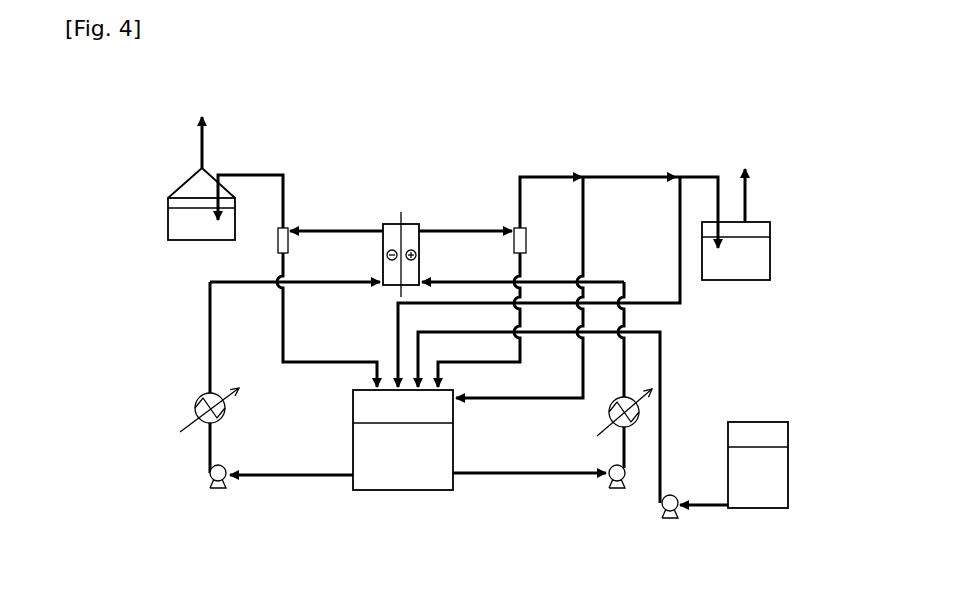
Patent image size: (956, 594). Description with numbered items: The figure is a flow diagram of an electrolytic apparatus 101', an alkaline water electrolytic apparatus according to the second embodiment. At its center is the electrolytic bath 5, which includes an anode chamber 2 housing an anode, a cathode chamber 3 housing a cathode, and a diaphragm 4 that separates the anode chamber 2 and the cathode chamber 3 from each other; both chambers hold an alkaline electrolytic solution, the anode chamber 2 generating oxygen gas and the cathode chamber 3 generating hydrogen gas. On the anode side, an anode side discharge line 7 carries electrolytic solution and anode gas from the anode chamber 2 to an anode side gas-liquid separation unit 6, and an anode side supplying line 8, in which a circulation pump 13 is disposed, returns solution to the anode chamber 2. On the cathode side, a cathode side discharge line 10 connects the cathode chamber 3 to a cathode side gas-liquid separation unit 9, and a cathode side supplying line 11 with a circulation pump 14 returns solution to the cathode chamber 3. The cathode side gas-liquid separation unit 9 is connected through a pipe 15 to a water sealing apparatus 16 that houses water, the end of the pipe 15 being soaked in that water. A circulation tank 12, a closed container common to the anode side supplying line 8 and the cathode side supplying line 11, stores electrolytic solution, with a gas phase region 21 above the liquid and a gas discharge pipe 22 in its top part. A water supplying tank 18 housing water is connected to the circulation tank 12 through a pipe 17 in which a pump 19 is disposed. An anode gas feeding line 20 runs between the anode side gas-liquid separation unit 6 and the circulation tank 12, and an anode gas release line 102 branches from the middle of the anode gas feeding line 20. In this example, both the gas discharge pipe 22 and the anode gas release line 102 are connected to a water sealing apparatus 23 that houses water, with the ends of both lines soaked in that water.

The electrolytic apparatus 101' is at (511, 98).
The anode chamber 2 is at (418, 228).
The cathode chamber 3 is at (390, 237).
The diaphragm 4 is at (402, 273).
The electrolytic bath 5 is at (411, 213).
The anode side gas-liquid separation unit 6 is at (527, 242).
The anode side discharge line 7 is at (448, 235).
The anode side supplying line 8 is at (458, 279).
The cathode side gas-liquid separation unit 9 is at (289, 248).
The cathode side discharge line 10 is at (322, 229).
The cathode side supplying line 11 is at (325, 287).
The circulation tank 12 is at (400, 490).
The circulation pump 13 is at (617, 488).
The circulation pump 14 is at (220, 487).
The pipe 15 is at (247, 172).
The water sealing apparatus 16 is at (183, 182).
The pipe 17 is at (663, 353).
The water supplying tank 18 is at (790, 470).
The pump 19 is at (670, 521).
The anode gas feeding line 20 is at (587, 220).
The gas phase region 21 is at (387, 405).
The gas discharge pipe 22 is at (396, 342).
The water sealing apparatus 23 is at (770, 247).
The anode gas release line 102 is at (625, 175).